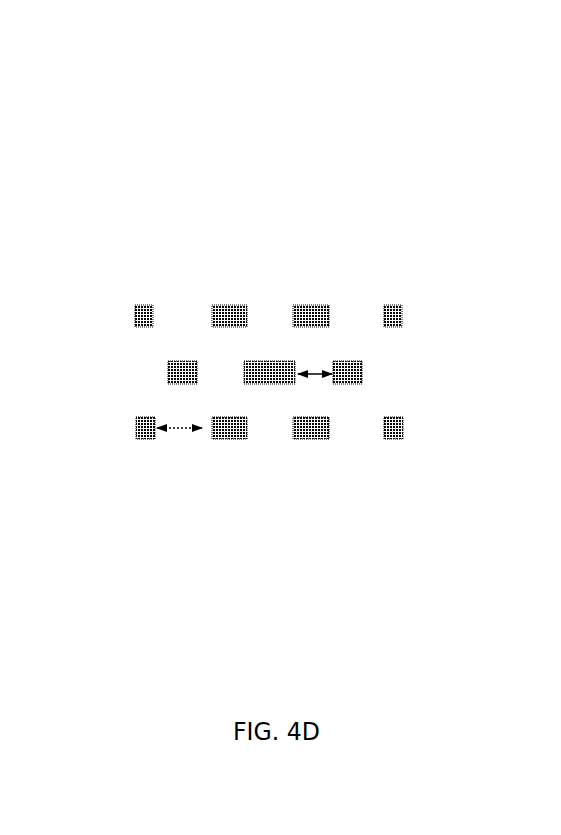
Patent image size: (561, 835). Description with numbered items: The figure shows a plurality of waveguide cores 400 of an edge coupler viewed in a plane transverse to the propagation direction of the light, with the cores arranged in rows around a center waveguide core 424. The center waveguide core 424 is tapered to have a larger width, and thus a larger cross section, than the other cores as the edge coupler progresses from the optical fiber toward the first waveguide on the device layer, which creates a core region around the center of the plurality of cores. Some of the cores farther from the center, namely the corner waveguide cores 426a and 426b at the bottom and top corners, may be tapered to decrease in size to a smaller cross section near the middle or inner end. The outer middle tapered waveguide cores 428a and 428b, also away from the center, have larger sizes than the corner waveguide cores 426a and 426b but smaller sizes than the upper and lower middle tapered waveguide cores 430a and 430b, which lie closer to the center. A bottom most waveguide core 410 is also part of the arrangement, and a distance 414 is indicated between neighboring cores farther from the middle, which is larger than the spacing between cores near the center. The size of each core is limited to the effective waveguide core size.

The ink pattern arrangement 400 is at (336, 159).
The bottom most waveguide core 410 is at (321, 389).
The distance between neighboring waveguide cores farther from the middle 414 is at (370, 379).
The center waveguide core 424 is at (275, 391).
The corner waveguide core 426a is at (131, 333).
The corner waveguide core 426b is at (404, 418).
The outer middle tapered waveguide core 428a is at (190, 390).
The outer middle tapered waveguide core 428b is at (361, 388).
The upper middle tapered waveguide core 430a is at (216, 412).
The lower middle tapered waveguide core 430b is at (318, 411).